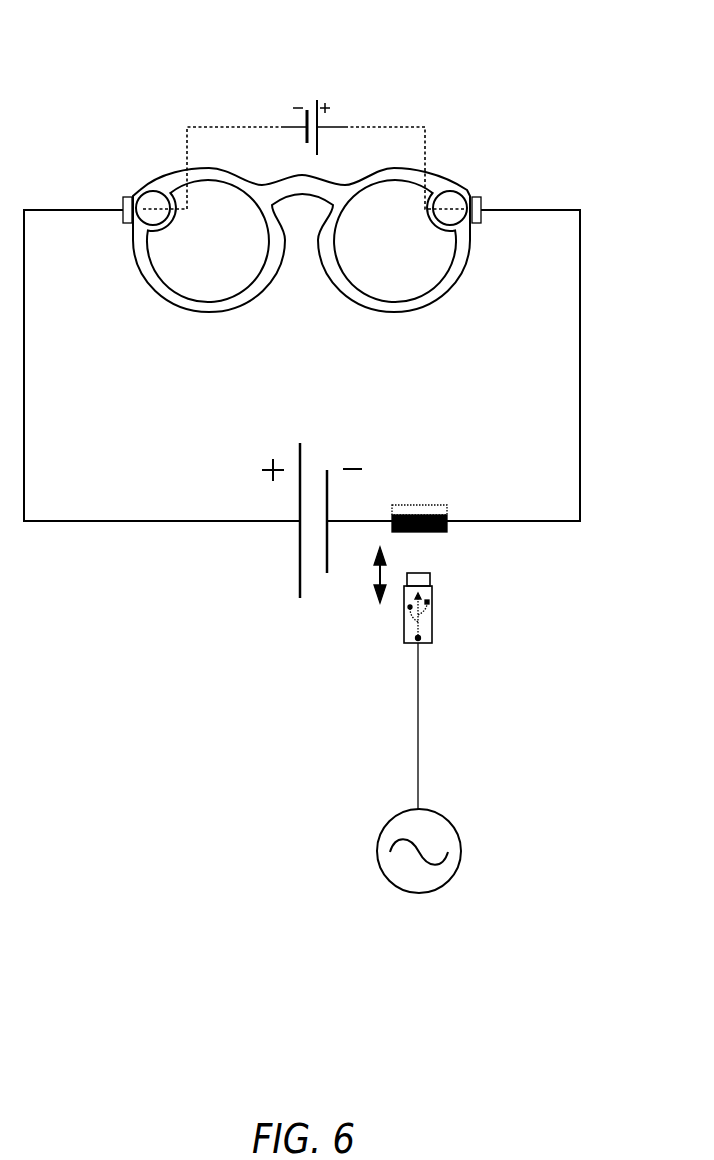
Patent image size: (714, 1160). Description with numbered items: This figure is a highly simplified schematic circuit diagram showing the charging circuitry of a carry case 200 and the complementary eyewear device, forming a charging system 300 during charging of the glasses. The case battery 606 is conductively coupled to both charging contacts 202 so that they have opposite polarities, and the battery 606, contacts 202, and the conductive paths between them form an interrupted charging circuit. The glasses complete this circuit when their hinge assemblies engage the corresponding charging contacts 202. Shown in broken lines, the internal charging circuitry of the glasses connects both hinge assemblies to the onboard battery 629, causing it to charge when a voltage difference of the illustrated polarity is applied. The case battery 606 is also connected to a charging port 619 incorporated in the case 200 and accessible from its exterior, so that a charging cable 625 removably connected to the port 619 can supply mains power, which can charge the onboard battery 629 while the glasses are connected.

The charging system 300 is at (547, 122).
The case 200 is at (224, 253).
The charging contact 202 is at (126, 198).
The onboard battery 629 is at (268, 100).
The battery 606 is at (280, 553).
The charging port 619 is at (447, 510).
The charging cable 625 is at (418, 742).